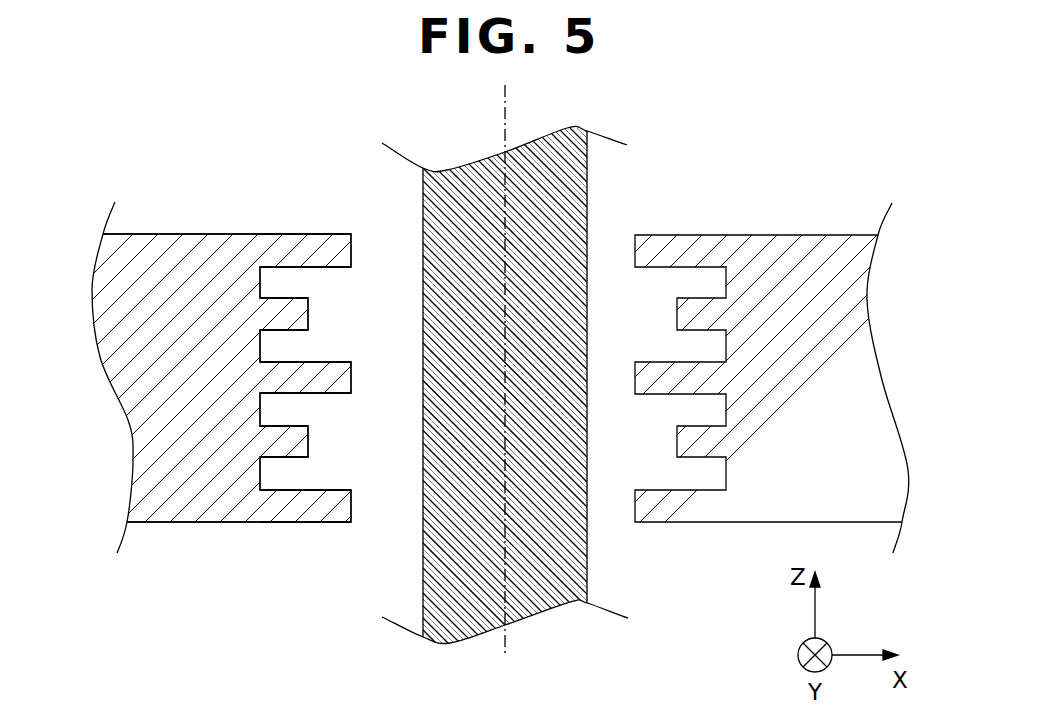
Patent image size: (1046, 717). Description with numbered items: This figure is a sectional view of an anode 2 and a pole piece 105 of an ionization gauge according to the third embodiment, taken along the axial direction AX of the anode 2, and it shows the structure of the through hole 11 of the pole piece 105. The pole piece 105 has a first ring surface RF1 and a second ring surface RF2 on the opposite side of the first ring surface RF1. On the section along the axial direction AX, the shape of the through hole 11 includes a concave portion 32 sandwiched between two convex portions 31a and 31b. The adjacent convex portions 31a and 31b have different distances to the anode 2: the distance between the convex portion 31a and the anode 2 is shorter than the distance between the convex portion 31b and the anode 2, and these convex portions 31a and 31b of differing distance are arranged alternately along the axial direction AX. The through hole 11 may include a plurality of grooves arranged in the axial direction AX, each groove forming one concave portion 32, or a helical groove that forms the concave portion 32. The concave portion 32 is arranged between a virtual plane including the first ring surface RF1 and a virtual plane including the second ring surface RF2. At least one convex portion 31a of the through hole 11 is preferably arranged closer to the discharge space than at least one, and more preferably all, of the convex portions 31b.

The pole piece 105 is at (250, 553).
The first ring surface RF1 is at (192, 234).
The second ring surface RF2 is at (175, 522).
The convex portion 31a is at (352, 241).
The convex portion 31b is at (308, 313).
The concave portion 32 is at (262, 282).
The anode 2 is at (423, 578).
The axial direction AX is at (505, 120).
The through hole 11 is at (625, 512).